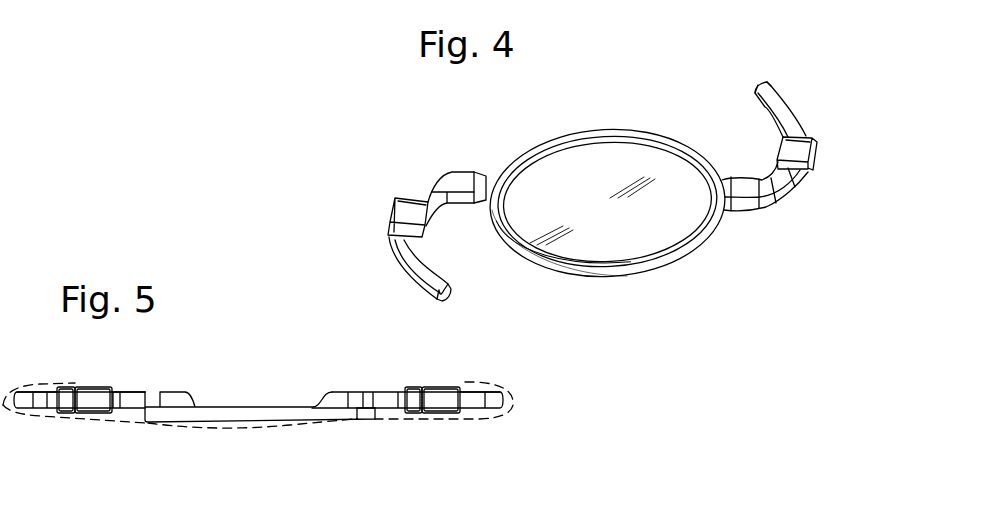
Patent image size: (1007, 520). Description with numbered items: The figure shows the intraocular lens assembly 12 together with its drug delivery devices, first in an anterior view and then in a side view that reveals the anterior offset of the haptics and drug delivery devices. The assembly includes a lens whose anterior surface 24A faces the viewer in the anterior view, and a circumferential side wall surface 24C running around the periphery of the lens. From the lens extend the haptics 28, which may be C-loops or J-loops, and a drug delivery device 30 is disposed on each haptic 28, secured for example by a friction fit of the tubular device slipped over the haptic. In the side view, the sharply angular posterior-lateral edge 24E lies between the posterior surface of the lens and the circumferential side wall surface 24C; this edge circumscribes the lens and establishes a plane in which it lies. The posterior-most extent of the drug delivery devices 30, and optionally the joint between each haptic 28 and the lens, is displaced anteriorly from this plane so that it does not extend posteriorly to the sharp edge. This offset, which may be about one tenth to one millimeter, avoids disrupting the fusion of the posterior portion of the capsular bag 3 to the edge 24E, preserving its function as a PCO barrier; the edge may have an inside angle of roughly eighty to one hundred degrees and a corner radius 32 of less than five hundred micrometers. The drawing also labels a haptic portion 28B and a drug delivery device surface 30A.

In FIG. 5, the capsular bag 3 is at (3, 405).
In FIG. 5, the intraocular lens assembly 12 is at (228, 384).
In FIG. 4, the anterior surface 24A is at (586, 201).
In FIG. 4, the circumferential side wall surface 24C is at (626, 272).
In FIG. 5, the circumferential side wall surface 24C is at (268, 409).
In FIG. 5, the posterior-lateral edge 24E is at (240, 425).
In FIG. 4, the haptic 28 is at (452, 297).
In FIG. 5, the haptic 28 is at (502, 392).
In FIG. 4, the haptic proximal portion 28B is at (740, 214).
In FIG. 4, the drug delivery device 30 is at (428, 232).
In FIG. 5, the drug delivery device 30 is at (443, 388).
In FIG. 4, the hinge block surface 30A is at (413, 196).
In FIG. 5, the corner radius 32 is at (372, 421).